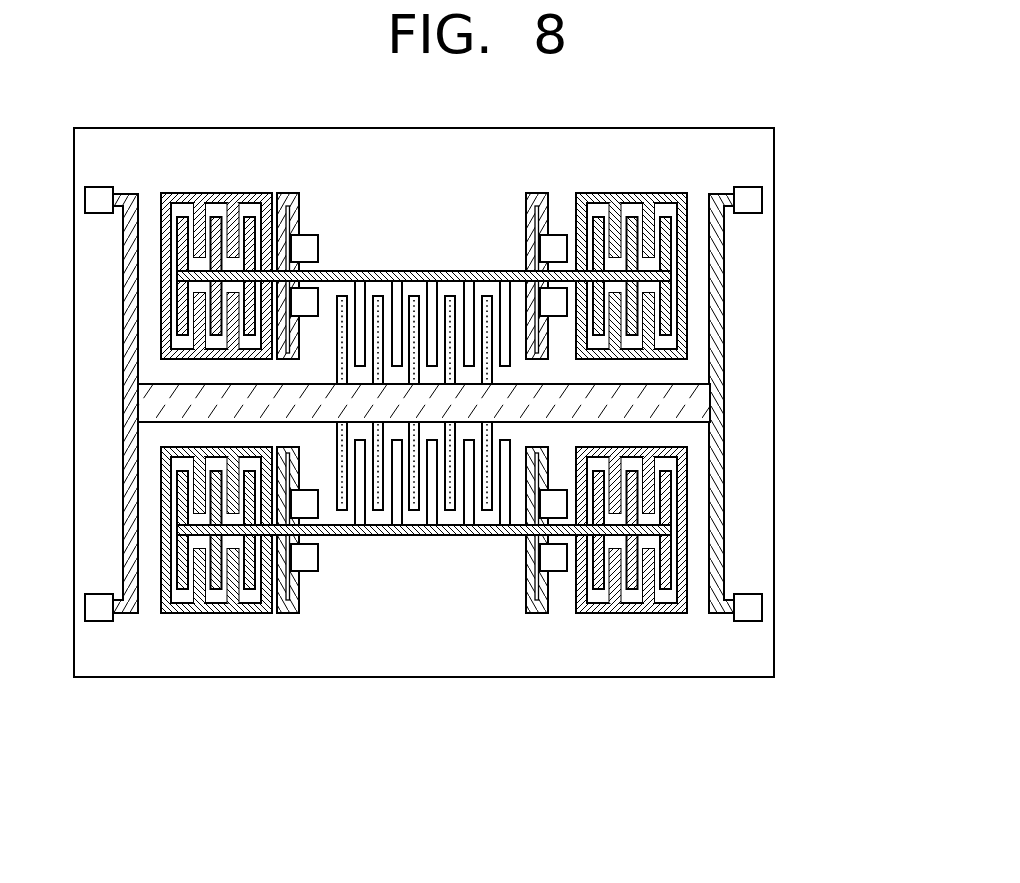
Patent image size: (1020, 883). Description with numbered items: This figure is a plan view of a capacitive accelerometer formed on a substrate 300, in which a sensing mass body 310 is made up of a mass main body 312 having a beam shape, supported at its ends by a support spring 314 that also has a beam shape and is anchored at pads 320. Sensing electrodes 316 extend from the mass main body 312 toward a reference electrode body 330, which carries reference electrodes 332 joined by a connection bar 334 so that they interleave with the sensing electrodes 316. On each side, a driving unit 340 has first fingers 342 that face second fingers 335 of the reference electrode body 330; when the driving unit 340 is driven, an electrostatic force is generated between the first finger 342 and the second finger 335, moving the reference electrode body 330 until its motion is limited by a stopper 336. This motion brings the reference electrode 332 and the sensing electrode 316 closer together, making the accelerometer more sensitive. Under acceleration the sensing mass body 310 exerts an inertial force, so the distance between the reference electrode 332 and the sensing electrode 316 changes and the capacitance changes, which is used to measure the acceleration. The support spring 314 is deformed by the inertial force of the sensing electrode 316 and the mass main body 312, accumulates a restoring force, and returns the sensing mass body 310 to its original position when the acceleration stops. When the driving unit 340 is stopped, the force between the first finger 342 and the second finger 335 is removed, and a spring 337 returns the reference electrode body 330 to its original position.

The substrate 300 is at (762, 648).
The sensing mass body 310 is at (518, 403).
The mass main body 312 is at (697, 408).
The support spring 314 is at (718, 440).
The sensing electrode 316 is at (488, 368).
The electrode pads 320 is at (755, 198).
The reference electrode body 330 is at (424, 508).
The reference electrode 332 is at (395, 515).
The connection bar 334 is at (463, 535).
The second finger 335 is at (670, 497).
The stopper 336 is at (557, 562).
The spring 337 is at (291, 610).
The driving unit 340 is at (687, 573).
The first finger 342 is at (657, 562).